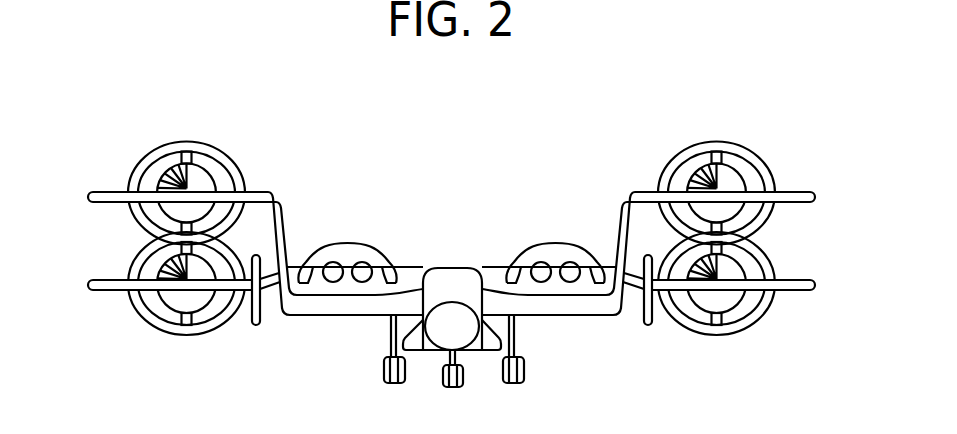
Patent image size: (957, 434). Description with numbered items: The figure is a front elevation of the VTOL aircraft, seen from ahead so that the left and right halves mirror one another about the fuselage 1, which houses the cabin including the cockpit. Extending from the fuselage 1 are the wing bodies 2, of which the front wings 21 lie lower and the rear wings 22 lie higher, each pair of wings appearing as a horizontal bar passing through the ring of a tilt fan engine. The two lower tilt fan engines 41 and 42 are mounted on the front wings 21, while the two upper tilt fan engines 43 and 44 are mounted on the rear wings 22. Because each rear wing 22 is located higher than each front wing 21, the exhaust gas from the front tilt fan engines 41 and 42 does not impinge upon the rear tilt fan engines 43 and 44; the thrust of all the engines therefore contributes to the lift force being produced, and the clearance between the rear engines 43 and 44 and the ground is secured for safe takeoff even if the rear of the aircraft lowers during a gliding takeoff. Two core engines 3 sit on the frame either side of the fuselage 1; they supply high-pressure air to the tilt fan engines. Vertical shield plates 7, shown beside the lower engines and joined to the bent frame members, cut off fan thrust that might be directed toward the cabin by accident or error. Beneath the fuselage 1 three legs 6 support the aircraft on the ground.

The fuselage 1 is at (452, 268).
The wing body 2 is at (343, 305).
The core engine 3 is at (362, 262).
The leg 6 is at (395, 384).
The shield plate 7 is at (628, 198).
The front wing 21 is at (822, 317).
The rear wing 22 is at (833, 176).
The tilt fan engine 41 is at (138, 262).
The tilt fan engine 42 is at (767, 260).
The tilt fan engine 43 is at (217, 160).
The tilt fan engine 44 is at (677, 163).